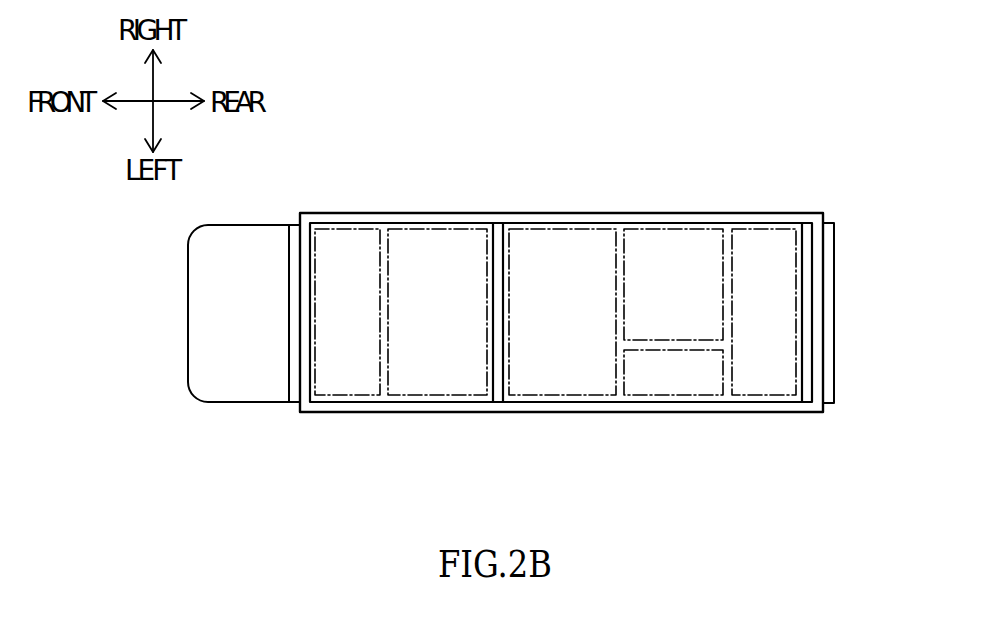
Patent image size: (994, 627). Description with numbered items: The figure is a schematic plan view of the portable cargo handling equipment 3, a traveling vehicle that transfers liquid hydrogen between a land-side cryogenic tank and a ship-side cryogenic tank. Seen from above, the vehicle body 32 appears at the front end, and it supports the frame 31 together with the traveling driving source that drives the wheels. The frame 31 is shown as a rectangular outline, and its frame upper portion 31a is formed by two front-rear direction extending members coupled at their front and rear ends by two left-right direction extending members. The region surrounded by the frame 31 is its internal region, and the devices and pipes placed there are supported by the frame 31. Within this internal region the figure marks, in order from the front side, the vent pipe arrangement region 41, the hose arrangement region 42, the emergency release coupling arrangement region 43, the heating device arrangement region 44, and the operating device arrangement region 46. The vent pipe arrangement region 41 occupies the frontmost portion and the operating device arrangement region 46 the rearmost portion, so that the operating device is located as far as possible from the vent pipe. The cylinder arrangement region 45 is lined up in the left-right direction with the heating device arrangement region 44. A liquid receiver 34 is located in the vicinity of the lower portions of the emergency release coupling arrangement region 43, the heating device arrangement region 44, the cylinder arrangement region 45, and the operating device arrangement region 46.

The portable cargo handling equipment 3 is at (740, 130).
The frame 31 is at (778, 213).
The frame upper portion 31a is at (600, 221).
The vehicle body 32 is at (187, 348).
The liquid receiver 34 is at (568, 397).
The vent pipe arrangement region 41 is at (347, 275).
The hose arrangement region 42 is at (445, 275).
The emergency release coupling arrangement region 43 is at (575, 275).
The heating device arrangement region 44 is at (705, 275).
The cylinder arrangement region 45 is at (685, 370).
The operating device arrangement region 46 is at (757, 275).